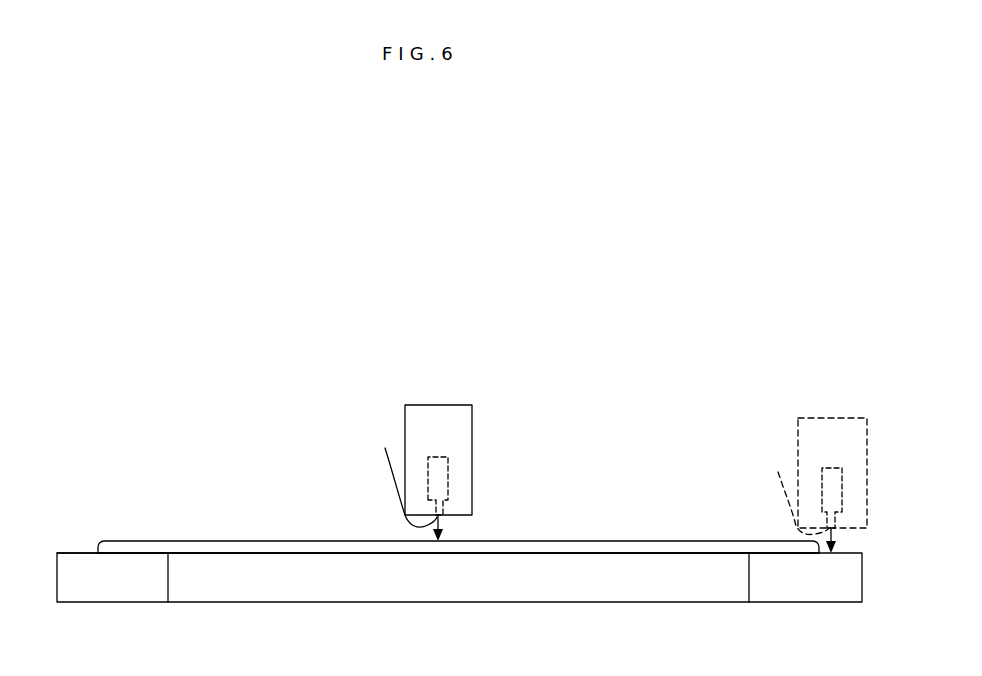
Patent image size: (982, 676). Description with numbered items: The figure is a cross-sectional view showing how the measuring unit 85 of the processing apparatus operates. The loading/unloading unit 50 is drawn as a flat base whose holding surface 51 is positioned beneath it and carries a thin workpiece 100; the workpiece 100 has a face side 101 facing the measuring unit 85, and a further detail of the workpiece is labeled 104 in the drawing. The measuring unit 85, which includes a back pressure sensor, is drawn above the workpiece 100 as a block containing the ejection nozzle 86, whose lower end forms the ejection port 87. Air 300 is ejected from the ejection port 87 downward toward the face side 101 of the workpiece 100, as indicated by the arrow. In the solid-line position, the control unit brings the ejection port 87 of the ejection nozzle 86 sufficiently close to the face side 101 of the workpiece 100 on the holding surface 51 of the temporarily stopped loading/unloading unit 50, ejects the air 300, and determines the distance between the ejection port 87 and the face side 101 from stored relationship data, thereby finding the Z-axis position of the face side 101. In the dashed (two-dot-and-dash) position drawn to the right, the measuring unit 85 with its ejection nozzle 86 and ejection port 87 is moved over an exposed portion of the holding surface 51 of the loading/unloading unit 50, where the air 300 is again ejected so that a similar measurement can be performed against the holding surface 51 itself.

The loading/unloading unit 50 is at (476, 606).
The holding surface 51 is at (770, 542).
The workpiece 100 is at (343, 538).
The face side 101 is at (237, 541).
The substrate lower layer 104 is at (288, 553).
The measuring unit 85 is at (468, 401).
The ejection nozzle 86 is at (450, 470).
The ejection port 87 is at (600, 480).
The air 300 is at (443, 527).